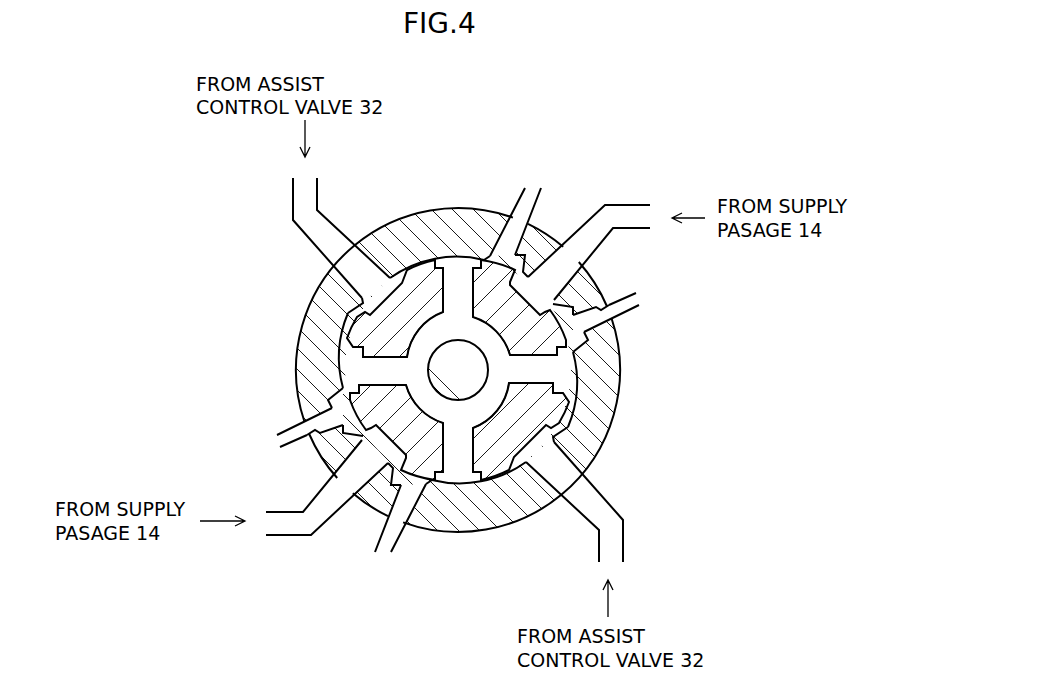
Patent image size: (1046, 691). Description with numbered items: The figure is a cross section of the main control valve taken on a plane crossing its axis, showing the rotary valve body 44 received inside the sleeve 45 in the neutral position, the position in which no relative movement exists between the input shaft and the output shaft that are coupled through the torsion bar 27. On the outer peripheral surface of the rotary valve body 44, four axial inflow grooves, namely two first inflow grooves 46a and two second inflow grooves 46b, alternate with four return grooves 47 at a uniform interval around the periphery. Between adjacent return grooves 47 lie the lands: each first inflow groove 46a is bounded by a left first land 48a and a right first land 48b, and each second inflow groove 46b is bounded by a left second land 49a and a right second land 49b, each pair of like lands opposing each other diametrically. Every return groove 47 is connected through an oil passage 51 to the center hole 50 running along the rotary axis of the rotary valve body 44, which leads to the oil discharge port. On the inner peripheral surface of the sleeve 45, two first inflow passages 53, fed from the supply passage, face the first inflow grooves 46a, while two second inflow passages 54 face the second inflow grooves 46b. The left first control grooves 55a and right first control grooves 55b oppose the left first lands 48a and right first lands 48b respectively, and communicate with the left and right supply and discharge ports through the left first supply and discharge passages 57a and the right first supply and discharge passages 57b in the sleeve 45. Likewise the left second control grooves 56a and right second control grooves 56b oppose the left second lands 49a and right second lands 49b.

The torsion bar 27 is at (458, 370).
The rotary valve body 44 is at (458, 390).
The sleeve 45 is at (305, 355).
The first inflow grooves 46a is at (464, 370).
The second inflow grooves 46b is at (458, 370).
The return grooves 47 is at (464, 500).
The left first lands 48a is at (421, 478).
The right first lands 48b is at (605, 322).
The left second lands 49a is at (574, 408).
The right second lands 49b is at (503, 483).
The center hole 50 is at (500, 392).
The oil passages 51 is at (470, 443).
The first inflow passages 53 is at (345, 470).
The second inflow passages 54 is at (571, 458).
The left first control grooves 55a is at (376, 503).
The right first control grooves 55b is at (605, 336).
The left second control grooves 56a is at (578, 428).
The right second control grooves 56b is at (533, 497).
The left first supply and discharge passages 57a is at (392, 551).
The right first supply and discharge passages 57b is at (612, 323).